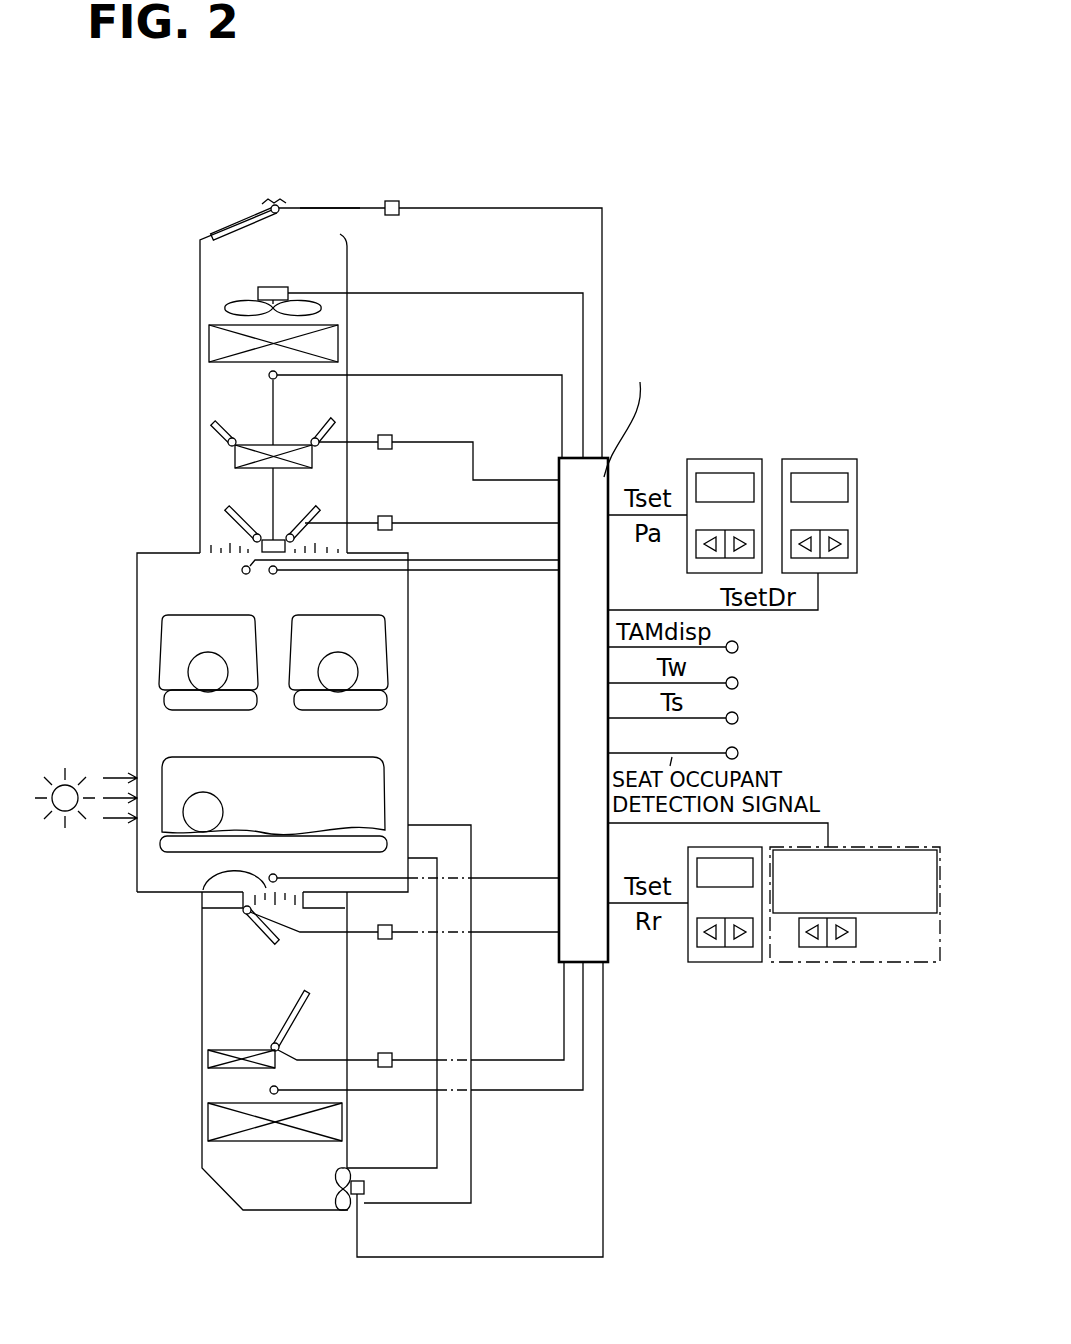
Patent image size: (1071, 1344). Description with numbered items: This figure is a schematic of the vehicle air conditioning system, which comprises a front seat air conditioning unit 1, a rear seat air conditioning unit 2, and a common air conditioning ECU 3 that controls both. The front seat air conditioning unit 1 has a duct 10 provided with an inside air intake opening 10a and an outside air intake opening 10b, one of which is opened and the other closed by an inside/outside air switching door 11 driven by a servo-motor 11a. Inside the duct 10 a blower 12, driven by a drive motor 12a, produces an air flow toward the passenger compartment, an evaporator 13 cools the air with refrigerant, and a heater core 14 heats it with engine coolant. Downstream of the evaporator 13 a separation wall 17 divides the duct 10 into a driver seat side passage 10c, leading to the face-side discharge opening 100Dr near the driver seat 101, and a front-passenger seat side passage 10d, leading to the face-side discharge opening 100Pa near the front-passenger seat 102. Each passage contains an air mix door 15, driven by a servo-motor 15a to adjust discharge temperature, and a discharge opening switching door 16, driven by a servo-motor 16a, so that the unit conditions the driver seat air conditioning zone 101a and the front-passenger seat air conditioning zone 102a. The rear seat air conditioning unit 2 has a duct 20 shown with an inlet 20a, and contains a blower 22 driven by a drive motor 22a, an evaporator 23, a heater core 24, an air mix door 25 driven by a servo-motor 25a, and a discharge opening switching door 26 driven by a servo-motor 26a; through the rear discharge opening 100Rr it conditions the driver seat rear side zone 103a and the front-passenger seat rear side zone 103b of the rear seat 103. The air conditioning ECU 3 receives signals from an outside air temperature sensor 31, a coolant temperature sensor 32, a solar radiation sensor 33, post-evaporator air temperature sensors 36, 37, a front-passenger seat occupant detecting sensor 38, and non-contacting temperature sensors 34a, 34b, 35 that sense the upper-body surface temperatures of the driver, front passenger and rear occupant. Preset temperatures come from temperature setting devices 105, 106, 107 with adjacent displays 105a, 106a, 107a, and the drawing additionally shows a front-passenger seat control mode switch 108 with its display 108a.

The front seat air conditioning unit 1 is at (183, 265).
The rear seat air conditioning unit 2 is at (212, 1195).
The air conditioning ECU 3 is at (608, 963).
The duct 10 is at (349, 256).
The inside air intake opening 10a is at (315, 222).
The outside air intake opening 10b is at (240, 212).
The driver seat side passage 10c is at (350, 385).
The front-passenger seat side passage 10d is at (232, 405).
The inside/outside air switching door 11 is at (225, 236).
The servo-motor 11a is at (392, 201).
The blower 12 is at (323, 308).
The drive motor 12a is at (288, 289).
The evaporator 13 is at (215, 340).
The heater core 14 is at (303, 445).
The air mix door 15 is at (214, 431).
The servo-motor 15a is at (392, 450).
The discharge opening switching door 16 is at (227, 508).
The servo-motor 16a is at (392, 530).
The separation wall 17 is at (273, 400).
The duct 20 is at (350, 1122).
The rear air inlet 20a is at (420, 826).
The blower 22 is at (340, 1208).
The drive motor 22a is at (362, 1197).
The evaporator 23 is at (215, 1122).
The heater core 24 is at (210, 1060).
The air mix door 25 is at (293, 1012).
The servo-motor 25a is at (385, 1053).
The discharge opening switching door 26 is at (265, 932).
The servo-motor 26a is at (385, 946).
The outside air temperature sensor 31 is at (738, 647).
The coolant temperature sensor 32 is at (738, 683).
The solar radiation sensor 33 is at (738, 718).
The non-contacting temperature sensor 34a is at (279, 575).
The non-contacting temperature sensor 34b is at (242, 569).
The non-contacting temperature sensor 35 is at (262, 874).
The post-evaporator air temperature sensor 36 is at (268, 375).
The post-evaporator air temperature sensor 37 is at (270, 1090).
The front-passenger seat occupant detecting sensor 38 is at (738, 753).
The face-side discharge opening 100Pa is at (232, 548).
The face-side discharge opening 100Dr is at (320, 556).
The rear seat side air outlet 100Rr is at (200, 888).
The driver seat 101 is at (384, 648).
The driver seat air conditioning zone 101a is at (376, 646).
The front-passenger seat 102 is at (164, 625).
The front-passenger seat air conditioning zone 102a is at (246, 646).
The rear seat 103 is at (385, 762).
The driver seat rear side air conditioning zone 103a is at (306, 785).
The front-passenger seat rear side air conditioning zone 103b is at (178, 785).
The temperature setting device 105 is at (745, 530).
The display 105a is at (720, 473).
The temperature setting device 106 is at (836, 573).
The display 106a is at (818, 473).
The temperature setting device 107 is at (707, 947).
The display 107a is at (747, 887).
The front passenger seat control mode switch 108 is at (843, 947).
The front passenger seat control mode display 108a is at (845, 847).